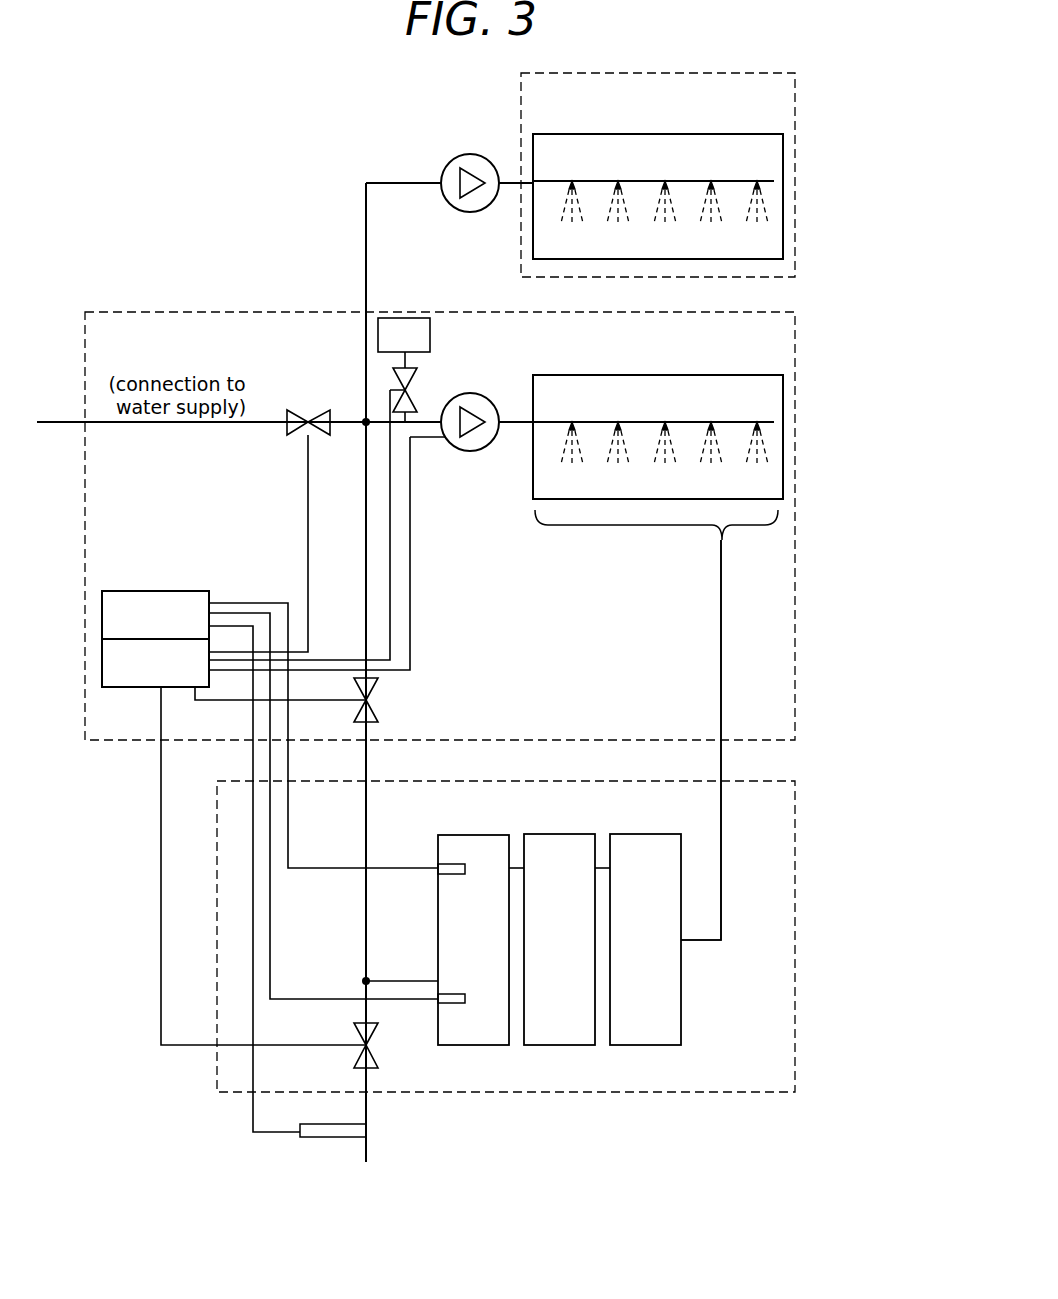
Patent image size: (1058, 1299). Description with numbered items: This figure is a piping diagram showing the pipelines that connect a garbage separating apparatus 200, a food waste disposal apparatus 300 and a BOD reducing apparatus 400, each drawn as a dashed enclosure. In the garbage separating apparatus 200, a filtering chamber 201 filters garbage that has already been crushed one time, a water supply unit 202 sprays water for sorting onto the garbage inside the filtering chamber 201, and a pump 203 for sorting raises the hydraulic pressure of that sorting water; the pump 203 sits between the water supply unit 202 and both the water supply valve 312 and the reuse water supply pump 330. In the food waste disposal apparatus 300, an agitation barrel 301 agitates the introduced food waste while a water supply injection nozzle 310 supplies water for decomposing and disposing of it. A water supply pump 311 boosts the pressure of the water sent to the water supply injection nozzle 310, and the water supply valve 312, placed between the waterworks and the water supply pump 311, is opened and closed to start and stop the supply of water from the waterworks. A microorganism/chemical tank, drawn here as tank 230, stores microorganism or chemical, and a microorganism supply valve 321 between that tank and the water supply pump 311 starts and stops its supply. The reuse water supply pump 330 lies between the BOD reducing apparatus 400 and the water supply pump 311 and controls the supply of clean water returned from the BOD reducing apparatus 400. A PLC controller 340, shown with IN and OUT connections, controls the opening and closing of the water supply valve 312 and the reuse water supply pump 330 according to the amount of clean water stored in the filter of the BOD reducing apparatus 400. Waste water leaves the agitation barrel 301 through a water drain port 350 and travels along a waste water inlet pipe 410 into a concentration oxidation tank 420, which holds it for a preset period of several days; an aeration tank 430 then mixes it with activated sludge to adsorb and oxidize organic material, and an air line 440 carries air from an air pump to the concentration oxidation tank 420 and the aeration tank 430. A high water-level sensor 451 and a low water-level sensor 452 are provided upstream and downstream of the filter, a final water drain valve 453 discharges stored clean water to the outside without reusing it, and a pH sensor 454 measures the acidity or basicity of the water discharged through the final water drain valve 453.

The garbage separating apparatus 200 is at (821, 118).
The filtering chamber 201 is at (775, 235).
The water supply unit 202 is at (735, 181).
The pump for sorting 203 is at (471, 154).
The water tank 230 is at (430, 335).
The food waste disposal apparatus 300 is at (821, 348).
The agitation barrel 301 is at (759, 476).
The water supply injection nozzle 310 is at (730, 420).
The water supply pump 311 is at (475, 396).
The water supply valve 312 is at (304, 410).
The microorganism supply valve 321 is at (415, 379).
The reuse water supply pump 330 is at (380, 702).
The PLC controller 340 is at (133, 688).
The water drain port 350 is at (740, 539).
The BOD reducing apparatus 400 is at (824, 855).
The waste water inlet pipe 410 is at (721, 828).
The concentration oxidation tank 420 is at (642, 834).
The aeration tank 430 is at (560, 834).
The air line 440 is at (482, 835).
The high water-level sensor 451 is at (455, 866).
The low water-level sensor 452 is at (457, 995).
The final water drain valve 453 is at (373, 1052).
The pH sensor 454 is at (323, 1128).